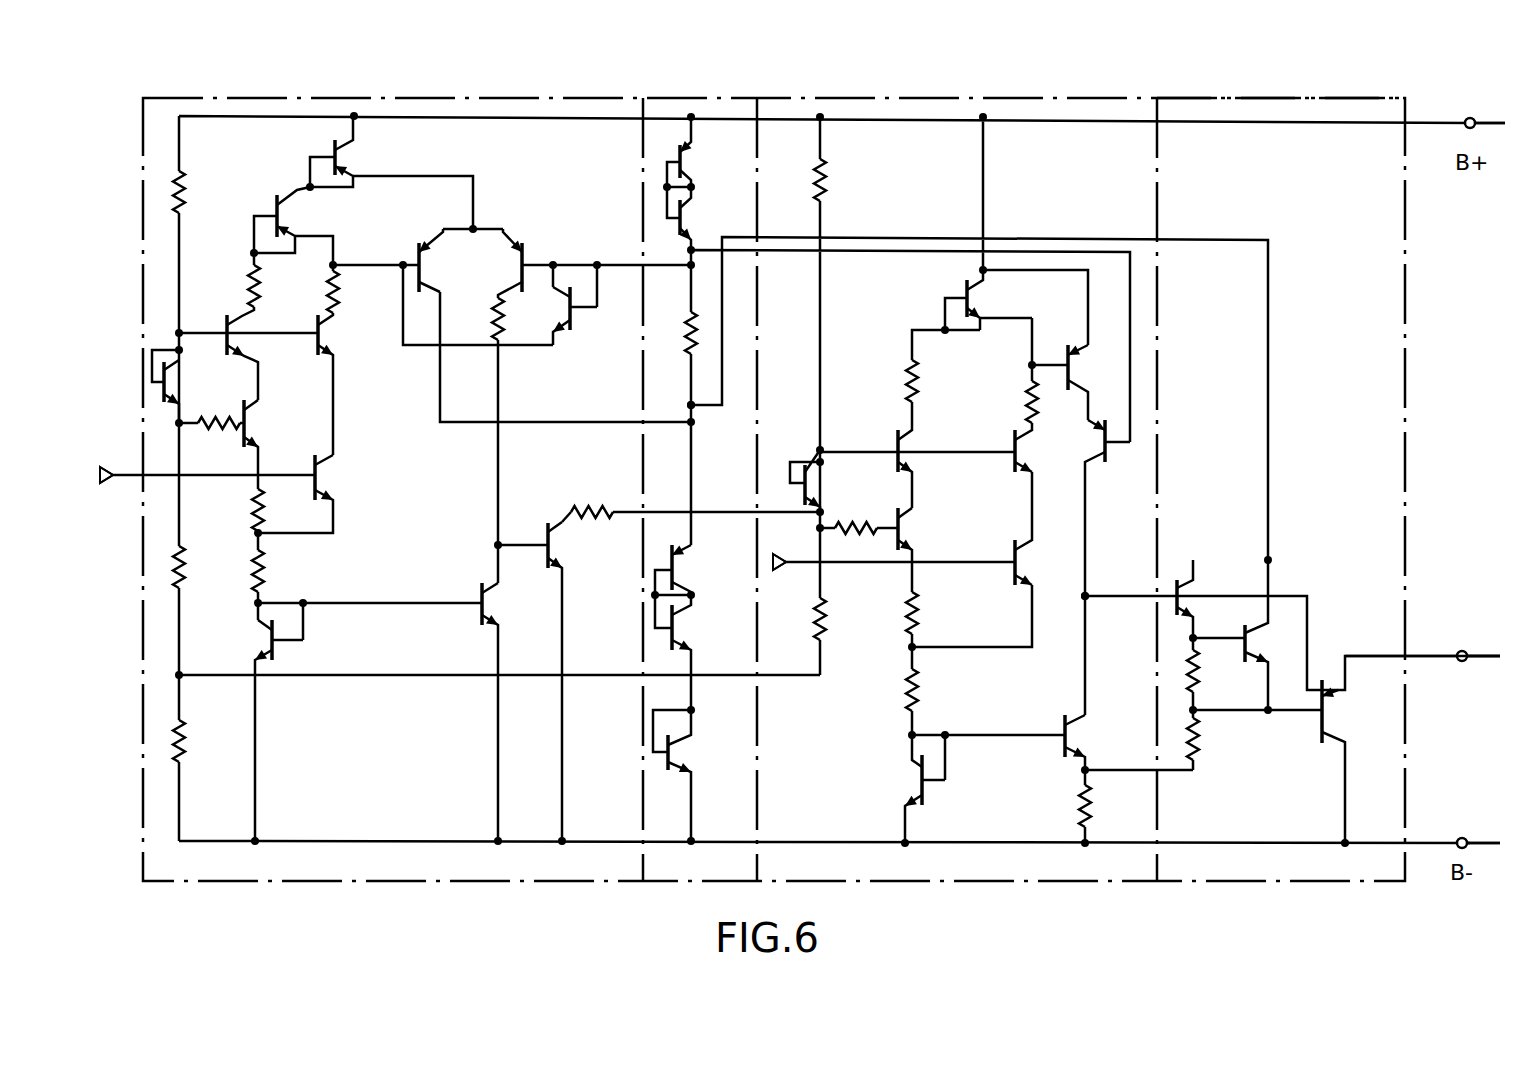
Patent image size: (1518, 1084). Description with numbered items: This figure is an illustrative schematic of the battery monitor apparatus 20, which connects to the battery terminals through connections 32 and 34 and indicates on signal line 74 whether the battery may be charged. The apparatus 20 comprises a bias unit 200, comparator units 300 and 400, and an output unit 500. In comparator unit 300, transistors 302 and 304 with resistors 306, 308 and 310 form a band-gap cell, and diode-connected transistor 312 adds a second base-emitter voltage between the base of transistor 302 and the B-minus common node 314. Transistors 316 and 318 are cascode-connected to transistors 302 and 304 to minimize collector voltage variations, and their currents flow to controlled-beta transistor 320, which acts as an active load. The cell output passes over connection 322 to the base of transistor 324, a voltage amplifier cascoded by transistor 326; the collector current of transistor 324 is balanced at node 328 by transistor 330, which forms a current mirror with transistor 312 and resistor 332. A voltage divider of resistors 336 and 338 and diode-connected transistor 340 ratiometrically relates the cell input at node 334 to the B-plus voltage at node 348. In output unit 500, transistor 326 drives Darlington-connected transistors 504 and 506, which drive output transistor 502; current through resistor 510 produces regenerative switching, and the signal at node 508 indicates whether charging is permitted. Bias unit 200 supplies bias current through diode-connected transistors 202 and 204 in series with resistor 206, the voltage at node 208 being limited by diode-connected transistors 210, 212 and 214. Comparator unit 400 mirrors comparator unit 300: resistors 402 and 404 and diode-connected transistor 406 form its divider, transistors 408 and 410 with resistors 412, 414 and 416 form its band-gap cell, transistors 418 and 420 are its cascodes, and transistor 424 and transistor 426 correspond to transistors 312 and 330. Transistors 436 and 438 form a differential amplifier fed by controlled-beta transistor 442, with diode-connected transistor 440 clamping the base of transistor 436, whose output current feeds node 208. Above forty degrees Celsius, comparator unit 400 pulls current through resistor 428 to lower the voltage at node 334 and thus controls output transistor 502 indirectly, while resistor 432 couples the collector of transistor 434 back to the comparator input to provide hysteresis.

The battery monitor apparatus 20 is at (283, 84).
The comparator unit 400 is at (410, 98).
The bias unit 200 is at (702, 88).
The comparator unit 300 is at (878, 98).
The output unit 500 is at (1278, 100).
The node 348 is at (1466, 118).
The connection 32 is at (1493, 112).
The node 508 is at (1422, 643).
The signal line 74 is at (1480, 660).
The B- or common node 314 is at (1466, 833).
The connection 34 is at (1478, 850).
The resistor 402 is at (209, 192).
The controlled-beta transistor 442 is at (334, 184).
The transistor 418 is at (239, 332).
The transistor 420 is at (303, 363).
The diode-connected transistor 406 is at (188, 386).
The resistor 412 is at (211, 433).
The transistor 408 is at (274, 444).
The resistor 414 is at (233, 519).
The resistor 416 is at (281, 585).
The resistor 404 is at (201, 567).
The resistor 432 is at (201, 741).
The transistor 410 is at (318, 494).
The transistor 330 is at (109, 466).
The transistor 424 is at (250, 730).
The transistor 436 is at (410, 253).
The transistor 438 is at (529, 395).
The diode-connected transistor 440 is at (578, 318).
The resistor 428 is at (598, 499).
The transistor 434 is at (576, 681).
The transistor 426 is at (512, 712).
The diode-connected transistor 202 is at (704, 152).
The diode-connected transistor 204 is at (704, 218).
The resistor 206 is at (682, 338).
The node 208 is at (696, 420).
The diode-connected transistor 210 is at (693, 570).
The diode-connected transistor 212 is at (693, 652).
The diode-connected transistor 214 is at (691, 775).
The resistor 338 is at (850, 180).
The resistor 336 is at (847, 619).
The diode-connected transistor 340 is at (828, 481).
The node 334 is at (792, 555).
The resistor 310 is at (853, 542).
The transistor 318 is at (932, 434).
The transistor 304 is at (930, 550).
The resistor 308 is at (936, 619).
The resistor 306 is at (939, 691).
The transistor 312 is at (900, 789).
The transistor 302 is at (1043, 530).
The transistor 316 is at (1043, 449).
The connection 322 is at (1028, 366).
The controlled-beta transistor 320 is at (987, 300).
The transistor 324 is at (1094, 382).
The transistor 326 is at (1111, 567).
The node 328 is at (1087, 595).
The resistor 332 is at (1078, 790).
The transistor 504 is at (1208, 605).
The transistor 506 is at (1271, 635).
The resistor 510 is at (1217, 710).
The output transistor 502 is at (1348, 761).